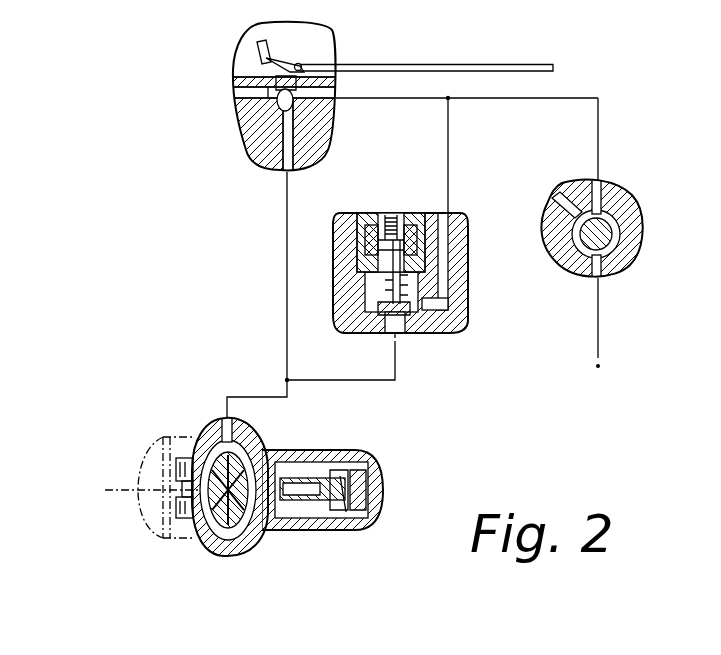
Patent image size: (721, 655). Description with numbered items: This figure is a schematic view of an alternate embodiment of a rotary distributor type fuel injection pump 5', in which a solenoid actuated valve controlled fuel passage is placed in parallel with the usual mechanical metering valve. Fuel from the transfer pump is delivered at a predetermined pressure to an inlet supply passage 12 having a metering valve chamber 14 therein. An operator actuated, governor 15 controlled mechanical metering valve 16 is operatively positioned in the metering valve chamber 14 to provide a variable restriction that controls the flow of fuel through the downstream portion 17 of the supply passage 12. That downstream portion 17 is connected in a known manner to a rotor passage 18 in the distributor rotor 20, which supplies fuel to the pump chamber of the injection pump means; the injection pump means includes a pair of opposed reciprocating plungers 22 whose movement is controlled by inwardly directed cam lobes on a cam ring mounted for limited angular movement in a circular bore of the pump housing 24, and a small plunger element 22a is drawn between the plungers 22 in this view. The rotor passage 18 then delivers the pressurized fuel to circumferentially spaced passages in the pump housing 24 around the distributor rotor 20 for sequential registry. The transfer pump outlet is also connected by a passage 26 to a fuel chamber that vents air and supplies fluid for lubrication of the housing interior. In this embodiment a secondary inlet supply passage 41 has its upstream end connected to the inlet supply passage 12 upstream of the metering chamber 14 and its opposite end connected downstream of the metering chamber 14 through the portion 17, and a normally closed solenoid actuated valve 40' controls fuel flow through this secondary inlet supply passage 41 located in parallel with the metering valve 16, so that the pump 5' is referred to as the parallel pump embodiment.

The rotary distributor injection pump 5' is at (468, 191).
The inlet supply passage 12 is at (284, 222).
The metering valve chamber 14 is at (277, 97).
The governor 15 is at (397, 64).
The mechanical metering valve 16 is at (292, 70).
The downstream portion of the supply passage 17 is at (287, 333).
The rotor passage 18 is at (262, 462).
The distributor rotor 20 is at (303, 504).
The reciprocating plungers 22 is at (180, 470).
The locking member pin 22a is at (178, 490).
The pump housing 24 is at (252, 135).
The passage 26 is at (632, 205).
The solenoid actuated valve 40' is at (361, 264).
The secondary inlet supply passage 41 is at (452, 276).